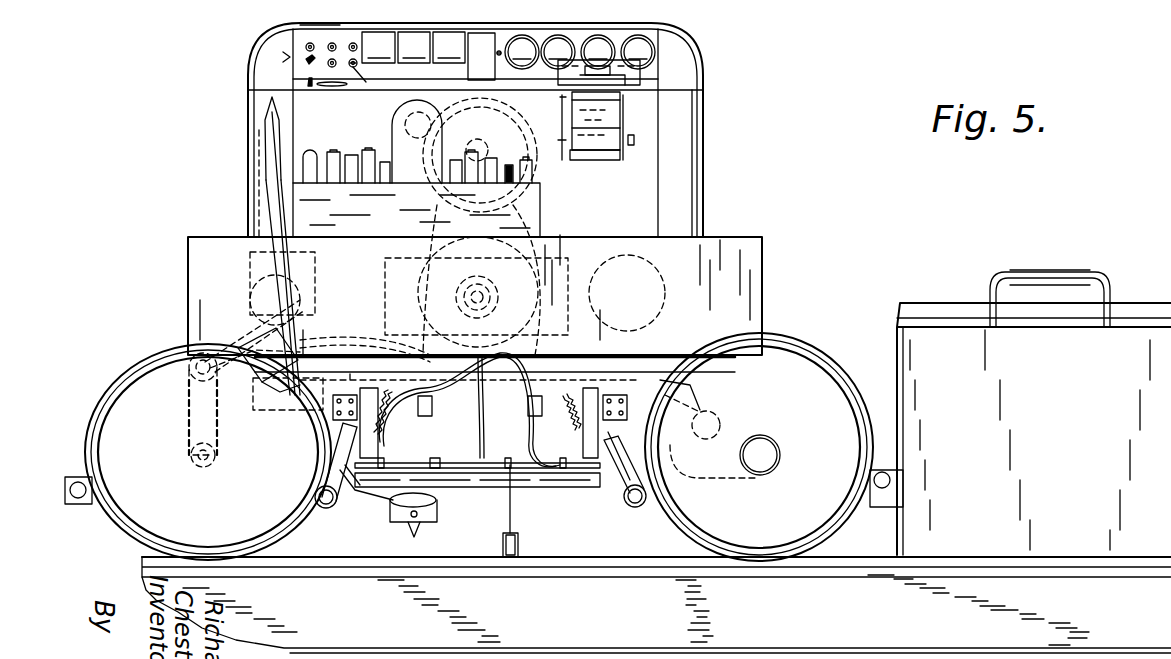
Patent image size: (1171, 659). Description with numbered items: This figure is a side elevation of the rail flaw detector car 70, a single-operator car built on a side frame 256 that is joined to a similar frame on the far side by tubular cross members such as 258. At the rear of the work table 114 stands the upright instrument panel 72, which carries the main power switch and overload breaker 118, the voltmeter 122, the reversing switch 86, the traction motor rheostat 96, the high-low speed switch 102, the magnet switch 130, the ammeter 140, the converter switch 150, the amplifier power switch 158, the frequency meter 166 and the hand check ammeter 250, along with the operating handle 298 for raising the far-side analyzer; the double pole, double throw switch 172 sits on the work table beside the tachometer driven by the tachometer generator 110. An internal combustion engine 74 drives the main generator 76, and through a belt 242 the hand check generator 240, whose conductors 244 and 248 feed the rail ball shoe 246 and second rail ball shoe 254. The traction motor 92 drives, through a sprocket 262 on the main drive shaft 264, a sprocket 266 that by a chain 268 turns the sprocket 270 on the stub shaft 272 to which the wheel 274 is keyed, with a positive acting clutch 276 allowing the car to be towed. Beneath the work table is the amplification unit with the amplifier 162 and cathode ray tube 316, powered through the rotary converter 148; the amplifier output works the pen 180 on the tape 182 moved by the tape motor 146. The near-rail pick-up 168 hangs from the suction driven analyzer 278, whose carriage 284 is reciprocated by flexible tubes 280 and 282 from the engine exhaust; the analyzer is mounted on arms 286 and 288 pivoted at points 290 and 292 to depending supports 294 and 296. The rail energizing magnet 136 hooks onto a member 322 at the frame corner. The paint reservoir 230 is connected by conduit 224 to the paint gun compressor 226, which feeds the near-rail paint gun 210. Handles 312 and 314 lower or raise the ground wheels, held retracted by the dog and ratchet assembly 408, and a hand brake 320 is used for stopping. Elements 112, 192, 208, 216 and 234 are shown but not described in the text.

The rail flaw detector car 70 is at (710, 125).
The instrument panel 72 is at (652, 31).
The internal combustion engine 74 is at (388, 268).
The main generator 76 is at (392, 287).
The reversing switch 86 is at (481, 56).
The traction motor 92 is at (262, 295).
The traction motor rheostat 96 is at (284, 58).
The high-low speed switch 102 is at (500, 55).
The tachometer generator 110 is at (252, 258).
The knob 112 is at (350, 68).
The work table 114 is at (310, 84).
The main power switch and overload breaker 118 is at (378, 47).
The voltmeter 122 is at (598, 52).
The magnet switch 130 is at (449, 47).
The rail energizing magnet 136 is at (1010, 402).
The ammeter 140 is at (558, 52).
The tape motor 146 is at (610, 100).
The rotary converter 148 is at (665, 280).
The converter switch 150 is at (414, 47).
The amplifier power switch 158 is at (357, 64).
The amplifier 162 is at (298, 200).
The frequency meter 166 is at (638, 52).
The near-rail pick-up 168 is at (510, 557).
The double pole, double throw switch 172 is at (290, 97).
The pen 180 is at (620, 77).
The tape 182 is at (622, 133).
The knob 192 is at (358, 70).
The cabinet top 208 is at (335, 26).
The near-rail paint gun 210 is at (423, 522).
The knob 216 is at (331, 68).
The conduit 224 is at (640, 372).
The paint gun compressor 226 is at (300, 368).
The paint reservoir 230 is at (705, 440).
The knob 234 is at (305, 46).
The hand check generator 240 is at (548, 172).
The belt 242 is at (540, 213).
The conductor 244 is at (395, 295).
The rail ball shoe 246 is at (252, 320).
The conductor 248 is at (335, 345).
The hand check ammeter 250 is at (522, 52).
The second rail ball shoe 254 is at (250, 340).
The side frame 256 is at (695, 405).
The tubular cross member 258 is at (705, 380).
The sprocket 262 is at (200, 352).
The main drive shaft 264 is at (225, 355).
The sprocket 266 is at (182, 405).
The chain 268 is at (182, 422).
The sprocket 270 is at (185, 442).
The stub shaft 272 is at (190, 468).
The wheel 274 is at (110, 395).
The positive acting clutch 276 is at (140, 362).
The suction driven analyzer 278 is at (524, 494).
The flexible tube 280 is at (480, 407).
The flexible tube 282 is at (505, 468).
The carriage 284 is at (510, 480).
The arm 286 is at (632, 500).
The arm 288 is at (350, 490).
The pivot point 290 is at (380, 445).
The pivot point 292 is at (585, 445).
The depending support 294 is at (385, 387).
The depending support 296 is at (572, 362).
The operating handle 298 is at (306, 62).
The handle 312 is at (322, 508).
The handle 314 is at (668, 496).
The cathode ray tube 316 is at (445, 125).
The hand brake 320 is at (278, 170).
The member 322 is at (900, 505).
The dog and ratchet assembly 408 is at (612, 422).